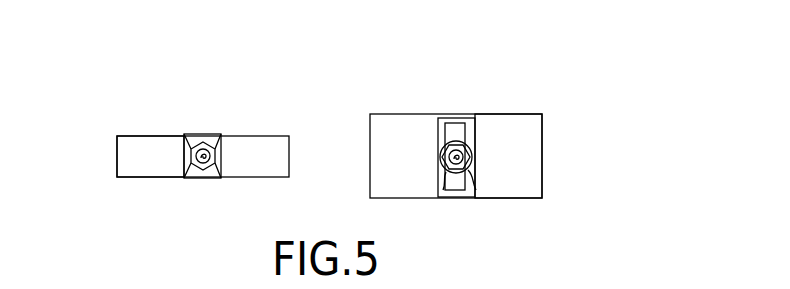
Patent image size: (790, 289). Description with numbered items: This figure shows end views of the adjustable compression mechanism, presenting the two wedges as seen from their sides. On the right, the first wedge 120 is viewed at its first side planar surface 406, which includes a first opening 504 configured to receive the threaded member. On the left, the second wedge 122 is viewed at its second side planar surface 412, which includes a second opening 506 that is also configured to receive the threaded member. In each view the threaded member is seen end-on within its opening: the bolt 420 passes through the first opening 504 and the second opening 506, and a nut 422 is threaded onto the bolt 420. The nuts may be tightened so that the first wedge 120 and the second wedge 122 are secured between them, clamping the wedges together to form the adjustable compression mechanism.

The first wedge 120 is at (560, 84).
The second wedge 122 is at (136, 102).
The first side planar surface 406 is at (535, 179).
The second side planar surface 412 is at (127, 156).
The bolt 420 is at (194, 178).
The nut 422 is at (216, 178).
The first opening 504 is at (457, 125).
The second opening 506 is at (208, 136).